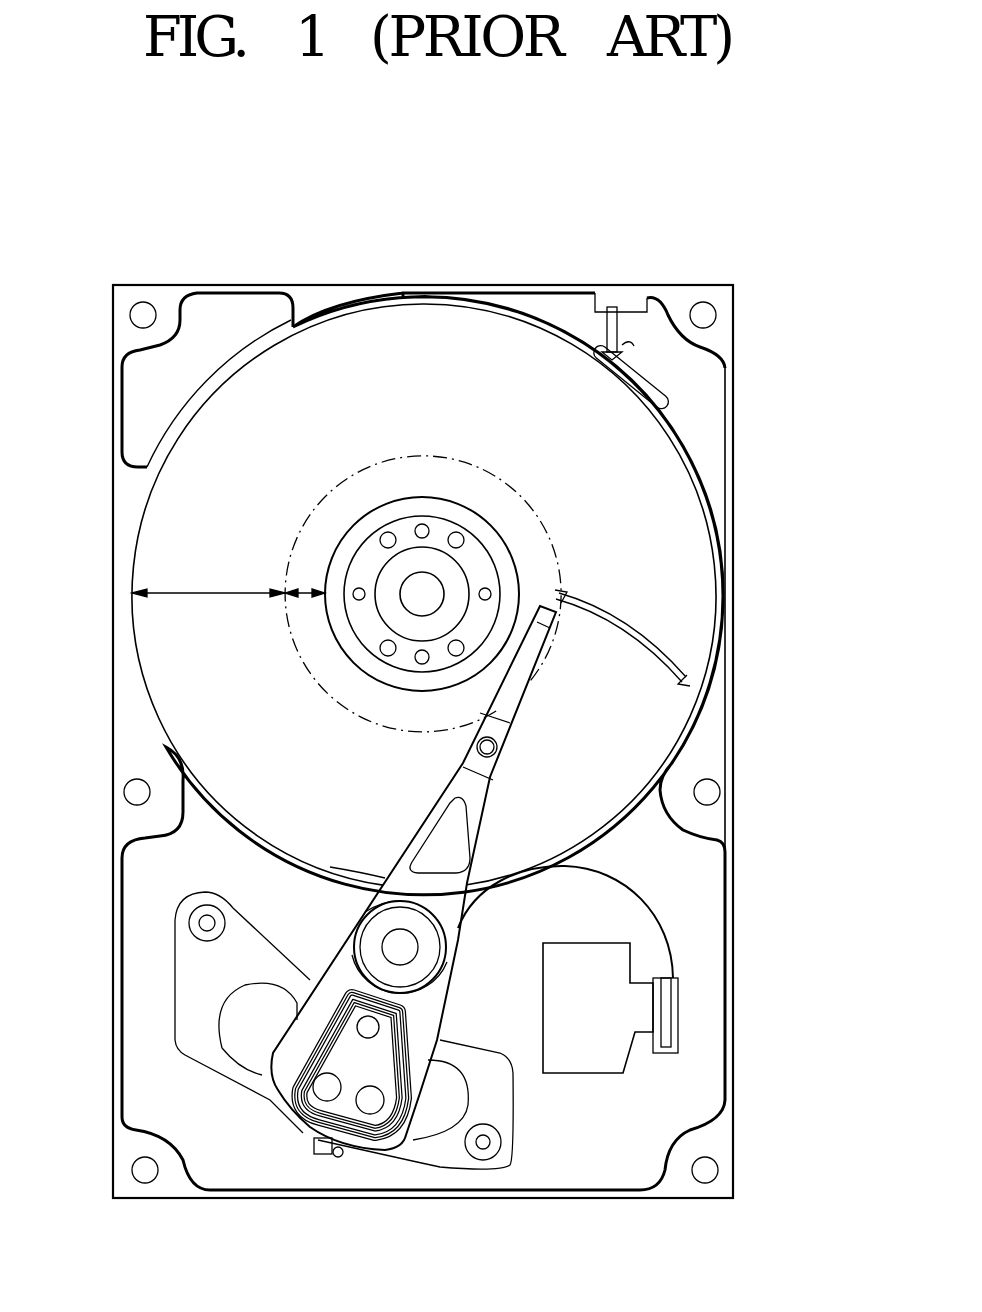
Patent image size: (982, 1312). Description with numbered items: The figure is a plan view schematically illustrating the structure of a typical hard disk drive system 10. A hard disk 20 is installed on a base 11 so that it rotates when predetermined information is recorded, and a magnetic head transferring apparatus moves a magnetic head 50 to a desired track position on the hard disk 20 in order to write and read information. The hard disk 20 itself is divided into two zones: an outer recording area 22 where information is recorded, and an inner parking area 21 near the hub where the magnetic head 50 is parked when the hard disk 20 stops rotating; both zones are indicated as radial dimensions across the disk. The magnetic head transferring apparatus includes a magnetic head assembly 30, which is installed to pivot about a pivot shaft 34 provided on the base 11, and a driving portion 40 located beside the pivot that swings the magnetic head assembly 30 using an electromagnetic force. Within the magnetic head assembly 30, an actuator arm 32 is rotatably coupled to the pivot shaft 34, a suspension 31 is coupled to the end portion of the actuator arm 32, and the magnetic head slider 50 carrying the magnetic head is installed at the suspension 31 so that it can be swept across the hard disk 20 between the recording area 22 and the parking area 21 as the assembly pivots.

The hard disk drive system 10 is at (720, 258).
The base 11 is at (715, 917).
The hard disk 20 is at (696, 471).
The parking area 21 is at (305, 580).
The recording area 22 is at (208, 580).
The magnetic head assembly 30 is at (438, 878).
The suspension 31 is at (513, 717).
The actuator arm 32 is at (478, 828).
The pivot shaft 34 is at (392, 935).
The driving portion 40 is at (164, 959).
The magnetic head slider 50 is at (555, 630).